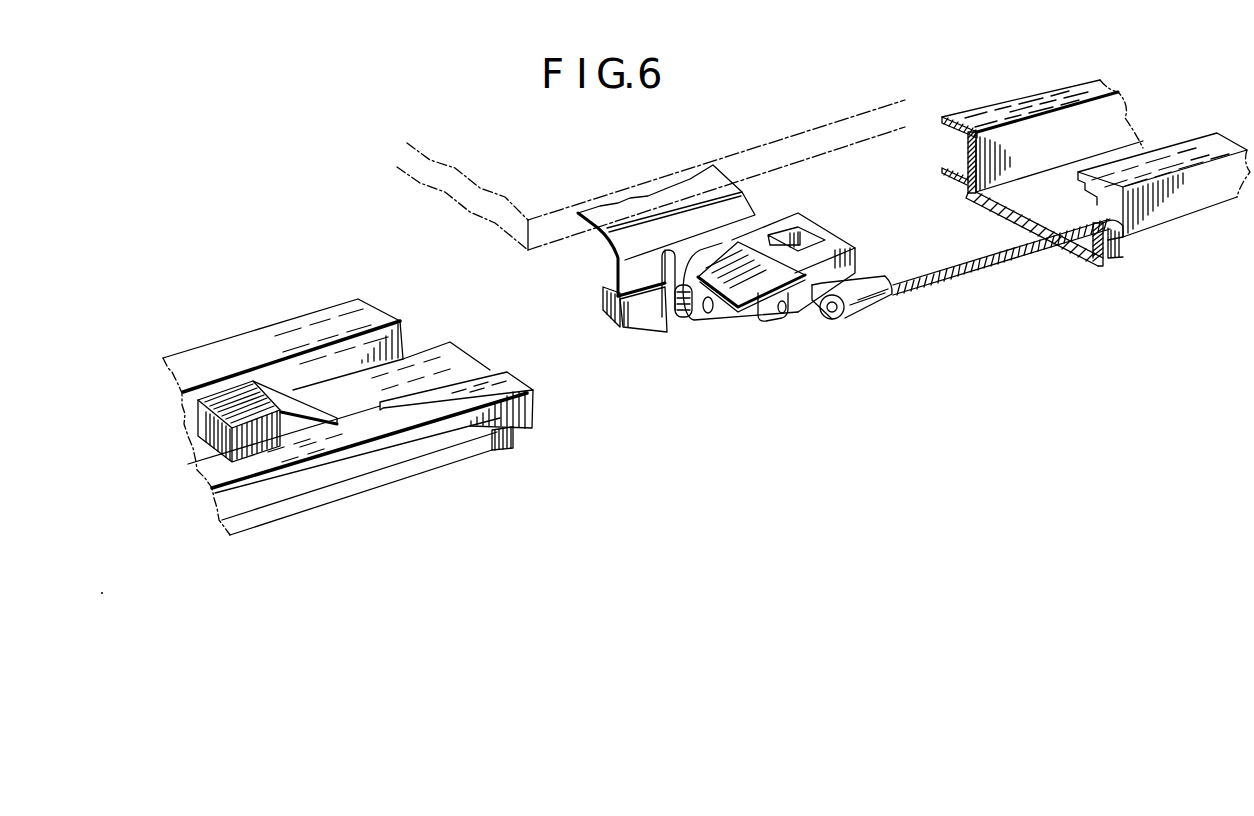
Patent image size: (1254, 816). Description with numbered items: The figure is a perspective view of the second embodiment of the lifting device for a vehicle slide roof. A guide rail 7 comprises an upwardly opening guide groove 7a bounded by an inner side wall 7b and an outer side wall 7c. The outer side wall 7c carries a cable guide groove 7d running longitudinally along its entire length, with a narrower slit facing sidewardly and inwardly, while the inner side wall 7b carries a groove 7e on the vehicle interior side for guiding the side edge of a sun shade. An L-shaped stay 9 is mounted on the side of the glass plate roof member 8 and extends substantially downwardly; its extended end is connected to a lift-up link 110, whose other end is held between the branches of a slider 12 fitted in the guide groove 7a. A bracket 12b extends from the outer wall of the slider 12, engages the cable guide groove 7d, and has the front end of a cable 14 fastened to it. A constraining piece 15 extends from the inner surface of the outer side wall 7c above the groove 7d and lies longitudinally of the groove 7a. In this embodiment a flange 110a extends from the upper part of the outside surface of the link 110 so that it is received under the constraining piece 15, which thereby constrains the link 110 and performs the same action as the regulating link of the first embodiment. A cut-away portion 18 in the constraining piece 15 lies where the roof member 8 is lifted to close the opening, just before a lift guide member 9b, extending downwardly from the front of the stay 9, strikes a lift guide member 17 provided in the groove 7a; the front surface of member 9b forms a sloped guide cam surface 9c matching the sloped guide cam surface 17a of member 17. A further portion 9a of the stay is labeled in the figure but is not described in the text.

The guide rail 7 is at (328, 305).
The guide groove 7a is at (406, 385).
The inner side wall 7b is at (991, 196).
The outer side wall 7c is at (1113, 238).
The cable guide groove 7d is at (1128, 233).
The groove 7e is at (968, 155).
The glass plate roof member 8 is at (787, 136).
The L-shaped stay 9 is at (661, 264).
The bracket bent portion 9a is at (655, 300).
The lift guide member 9b is at (643, 318).
The sloped guide cam surface 9c is at (612, 322).
The slider 12 is at (842, 245).
The bracket 12b is at (873, 295).
The cable 14 is at (986, 262).
The constraining piece 15 is at (478, 375).
The lift guide member 17 is at (250, 404).
The sloped guide cam surface 17a is at (307, 407).
The cut-away portion 18 is at (383, 410).
The lift-up link 110 is at (680, 313).
The flange 110a is at (775, 321).